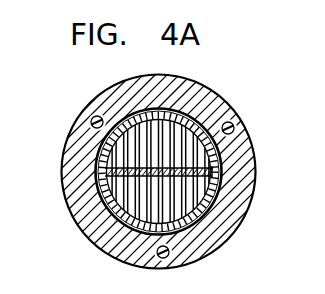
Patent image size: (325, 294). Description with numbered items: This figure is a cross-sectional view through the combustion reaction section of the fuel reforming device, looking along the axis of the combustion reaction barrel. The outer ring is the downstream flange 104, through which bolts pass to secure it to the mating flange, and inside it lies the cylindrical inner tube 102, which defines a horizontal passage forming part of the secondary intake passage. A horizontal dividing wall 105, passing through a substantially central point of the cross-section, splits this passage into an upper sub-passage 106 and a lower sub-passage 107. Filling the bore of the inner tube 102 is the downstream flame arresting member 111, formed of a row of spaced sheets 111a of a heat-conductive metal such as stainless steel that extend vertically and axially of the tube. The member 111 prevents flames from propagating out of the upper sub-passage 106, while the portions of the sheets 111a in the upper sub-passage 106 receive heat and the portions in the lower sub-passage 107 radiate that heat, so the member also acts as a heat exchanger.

The cylindrical inner tube 102 is at (203, 215).
The downstream flange 104 is at (205, 258).
The horizontal dividing wall 105 is at (207, 164).
The upper sub-passage 106 is at (190, 152).
The lower sub-passage 107 is at (202, 182).
The downstream flame arresting member 111 is at (97, 150).
The sheets 111a is at (183, 114).